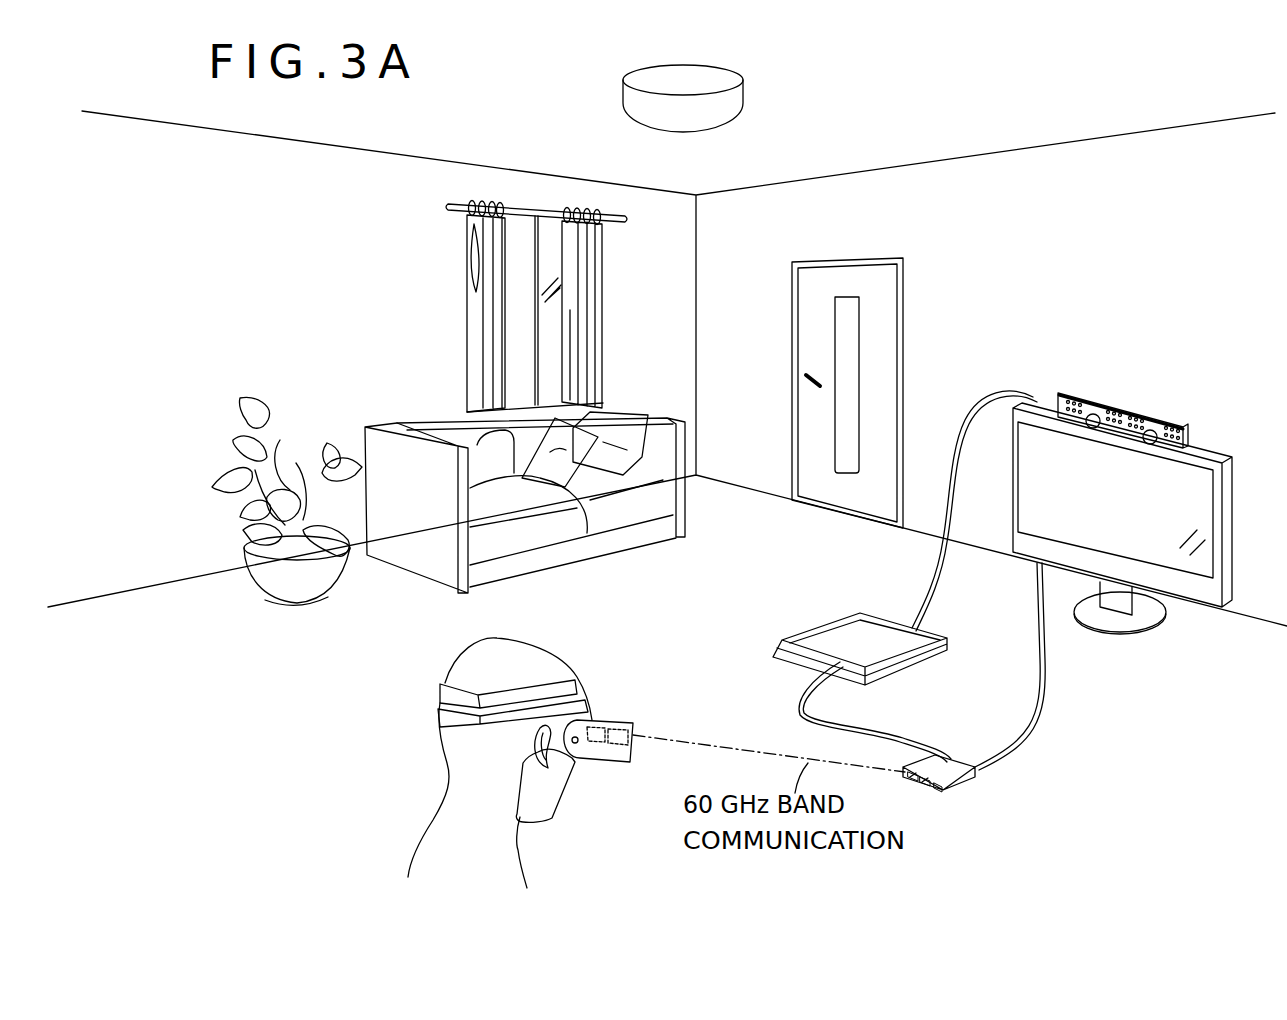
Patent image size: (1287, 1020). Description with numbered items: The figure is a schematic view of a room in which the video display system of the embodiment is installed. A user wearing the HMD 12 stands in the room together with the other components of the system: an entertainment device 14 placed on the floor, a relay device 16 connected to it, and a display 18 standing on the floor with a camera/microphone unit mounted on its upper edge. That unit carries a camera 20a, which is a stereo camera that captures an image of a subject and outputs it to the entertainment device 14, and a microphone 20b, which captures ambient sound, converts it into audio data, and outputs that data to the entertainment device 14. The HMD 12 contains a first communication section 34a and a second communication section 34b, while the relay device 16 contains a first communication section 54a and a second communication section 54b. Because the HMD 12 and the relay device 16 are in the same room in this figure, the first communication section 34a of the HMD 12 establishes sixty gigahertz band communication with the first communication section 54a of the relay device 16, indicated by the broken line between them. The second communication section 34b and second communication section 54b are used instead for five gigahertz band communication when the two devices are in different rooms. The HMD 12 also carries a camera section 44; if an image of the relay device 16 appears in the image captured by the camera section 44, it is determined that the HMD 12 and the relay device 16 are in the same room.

The HMD 12 is at (621, 738).
The entertainment device 14 is at (813, 628).
The relay device 16 is at (932, 782).
The display 18 is at (1149, 487).
The camera 20a is at (1150, 444).
The microphone 20b is at (1176, 432).
The first communication section 34a is at (632, 722).
The second communication section 34b is at (590, 733).
The camera section 44 is at (577, 746).
The first communication section 54a is at (942, 788).
The second communication section 54b is at (900, 769).